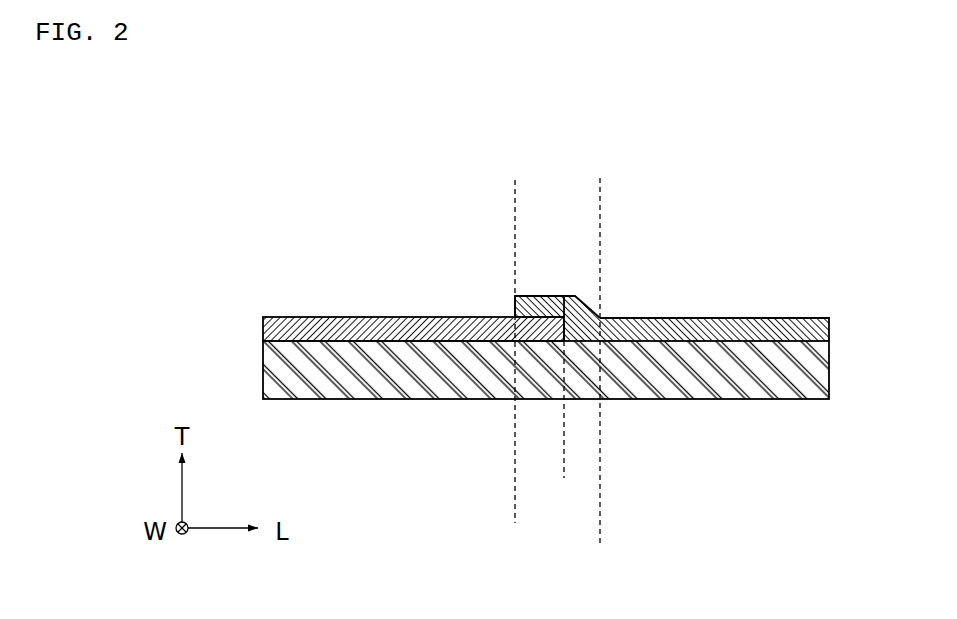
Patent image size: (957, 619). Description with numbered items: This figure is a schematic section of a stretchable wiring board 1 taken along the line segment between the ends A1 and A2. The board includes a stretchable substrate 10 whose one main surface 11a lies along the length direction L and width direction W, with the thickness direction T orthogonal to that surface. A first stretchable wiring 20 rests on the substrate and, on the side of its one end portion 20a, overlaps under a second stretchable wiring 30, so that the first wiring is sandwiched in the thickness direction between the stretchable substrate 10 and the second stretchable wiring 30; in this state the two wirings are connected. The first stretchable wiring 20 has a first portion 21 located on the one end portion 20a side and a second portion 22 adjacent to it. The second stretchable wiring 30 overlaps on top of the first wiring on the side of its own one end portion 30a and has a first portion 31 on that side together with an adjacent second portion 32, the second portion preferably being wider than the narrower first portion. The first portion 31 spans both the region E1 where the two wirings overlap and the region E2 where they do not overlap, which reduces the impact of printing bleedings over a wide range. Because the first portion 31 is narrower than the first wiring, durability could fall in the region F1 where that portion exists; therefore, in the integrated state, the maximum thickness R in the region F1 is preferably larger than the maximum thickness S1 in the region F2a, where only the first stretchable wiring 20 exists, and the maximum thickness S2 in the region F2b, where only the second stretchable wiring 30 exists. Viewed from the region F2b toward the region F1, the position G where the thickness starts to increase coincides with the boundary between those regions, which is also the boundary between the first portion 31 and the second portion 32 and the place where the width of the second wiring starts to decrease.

The stretchable wiring board 1 is at (812, 288).
The stretchable substrate 10 is at (278, 365).
The one main surface of the stretchable substrate 11a is at (286, 322).
The first stretchable wiring 20 is at (413, 270).
The first portion of the first stretchable wiring 21 is at (497, 290).
The second portion of the first stretchable wiring 22 is at (414, 323).
The one end portion of the first stretchable wiring 20a is at (567, 334).
The second stretchable wiring 30 is at (672, 270).
The first portion of the second stretchable wiring 31 is at (588, 310).
The second portion of the second stretchable wiring 32 is at (608, 240).
The one end portion of the second stretchable wiring 30a is at (515, 311).
The maximum thickness in the region F1 R is at (542, 367).
The maximum thickness in the region F2a S1 is at (332, 365).
The maximum thickness in the region F2b S2 is at (767, 365).
The region where the first and second stretchable wirings overlap E1 is at (515, 469).
The region where the first and second stretchable wirings do not overlap E2 is at (564, 469).
The region where the first portion of the second stretchable wiring exists F1 is at (515, 515).
The region where only the first stretchable wiring exists F2a is at (263, 186).
The region where only the second stretchable wiring exists F2b is at (829, 186).
The position where the thickness starts to increase G is at (600, 564).
The end of line segment A1-A2 A1 is at (245, 414).
The end of line segment A1- A2 is at (848, 415).